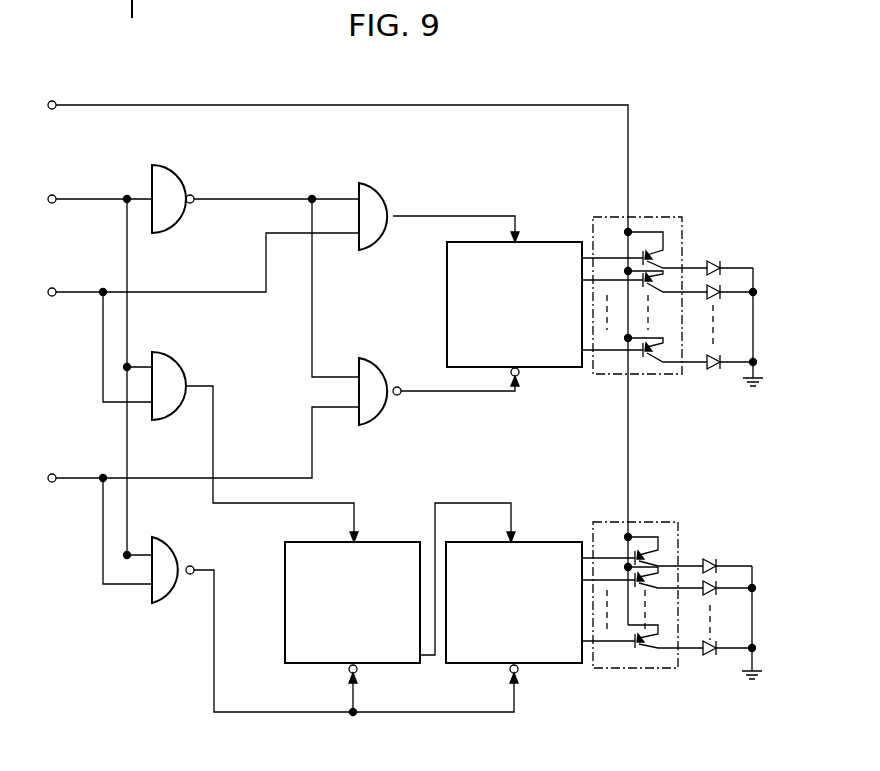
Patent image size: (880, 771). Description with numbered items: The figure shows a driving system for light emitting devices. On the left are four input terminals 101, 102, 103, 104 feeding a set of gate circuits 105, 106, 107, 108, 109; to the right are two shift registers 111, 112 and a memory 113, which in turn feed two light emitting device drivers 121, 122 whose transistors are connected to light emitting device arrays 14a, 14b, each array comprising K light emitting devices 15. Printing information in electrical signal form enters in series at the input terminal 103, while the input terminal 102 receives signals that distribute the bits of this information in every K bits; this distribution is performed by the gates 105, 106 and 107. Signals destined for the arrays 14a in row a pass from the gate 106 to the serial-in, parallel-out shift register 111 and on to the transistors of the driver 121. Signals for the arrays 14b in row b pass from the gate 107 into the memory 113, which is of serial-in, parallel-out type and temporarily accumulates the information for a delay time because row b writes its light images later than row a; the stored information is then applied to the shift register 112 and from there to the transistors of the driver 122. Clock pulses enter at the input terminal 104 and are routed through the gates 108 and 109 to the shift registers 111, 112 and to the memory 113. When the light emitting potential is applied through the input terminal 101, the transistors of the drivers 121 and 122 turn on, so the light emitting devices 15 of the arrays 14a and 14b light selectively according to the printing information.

The input terminal 101 is at (333, 350).
The input terminal 102 is at (95, 365).
The input terminal 103 is at (198, 317).
The input terminal 104 is at (198, 495).
The gate circuit 105 is at (180, 191).
The gate circuit 106 is at (386, 208).
The gate circuit 107 is at (178, 373).
The gate circuit 108 is at (383, 375).
The gate circuit 109 is at (175, 562).
The shift register 111 is at (543, 240).
The shift register 112 is at (543, 540).
The memory 113 is at (383, 540).
The light emitting device driver 121 is at (643, 215).
The light emitting device driver 122 is at (640, 522).
The light emitting devices 15 is at (724, 288).
The light emitting device array 14a is at (723, 333).
The light emitting device array 14b is at (723, 622).